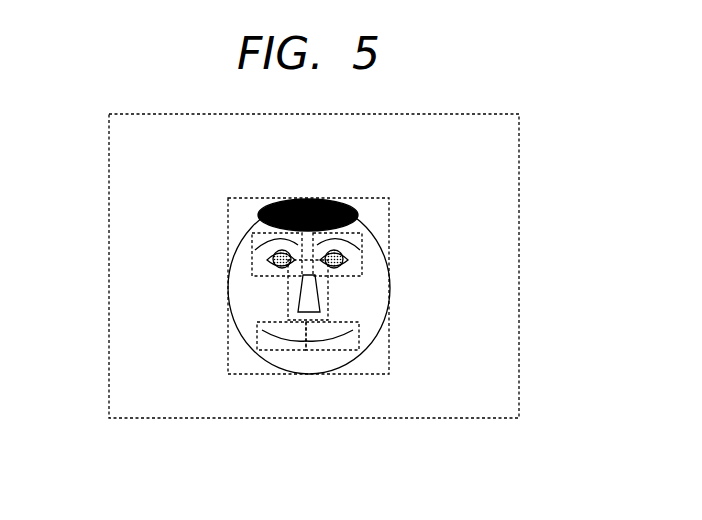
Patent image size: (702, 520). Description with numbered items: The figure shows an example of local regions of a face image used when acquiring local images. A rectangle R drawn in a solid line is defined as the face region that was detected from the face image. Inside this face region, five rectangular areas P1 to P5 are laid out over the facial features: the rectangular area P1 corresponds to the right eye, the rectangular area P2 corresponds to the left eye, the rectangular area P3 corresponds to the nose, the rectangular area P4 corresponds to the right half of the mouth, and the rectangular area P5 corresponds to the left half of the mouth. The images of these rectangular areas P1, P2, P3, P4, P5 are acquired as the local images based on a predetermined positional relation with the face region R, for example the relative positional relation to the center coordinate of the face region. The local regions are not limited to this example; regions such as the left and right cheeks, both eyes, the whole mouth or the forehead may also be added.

The rectangle (face region) R is at (228, 247).
The rectangular area (right eye) P1 is at (260, 222).
The rectangular area (left eye) P2 is at (357, 222).
The rectangular area (nose) P3 is at (328, 293).
The rectangular area (right half of mouth) P4 is at (280, 350).
The rectangular area (left half of mouth) P5 is at (340, 350).